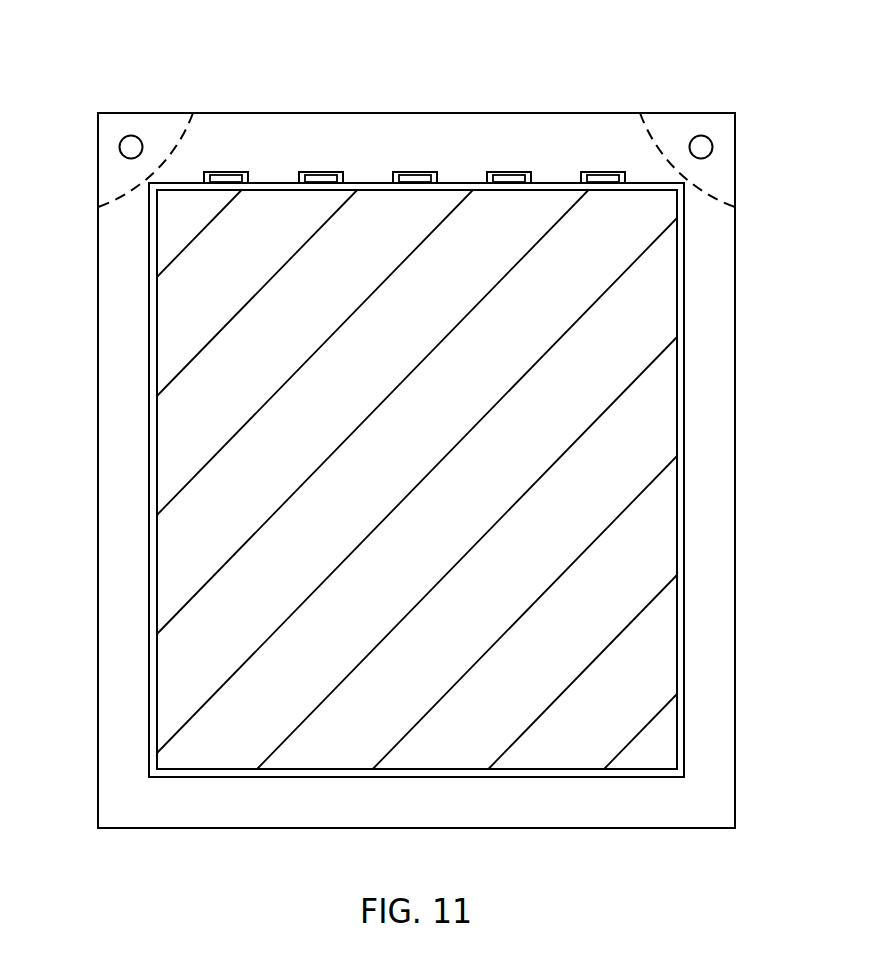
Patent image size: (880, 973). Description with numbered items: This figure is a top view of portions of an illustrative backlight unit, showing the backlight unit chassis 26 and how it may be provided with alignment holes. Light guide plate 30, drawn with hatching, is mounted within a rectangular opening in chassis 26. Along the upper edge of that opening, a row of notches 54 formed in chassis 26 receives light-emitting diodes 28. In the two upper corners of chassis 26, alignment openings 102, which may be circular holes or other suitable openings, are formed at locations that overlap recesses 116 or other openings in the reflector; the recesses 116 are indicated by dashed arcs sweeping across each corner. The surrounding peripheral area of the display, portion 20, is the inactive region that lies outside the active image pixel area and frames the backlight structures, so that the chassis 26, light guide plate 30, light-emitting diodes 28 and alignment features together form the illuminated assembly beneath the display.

The portion of display 20 is at (115, 455).
The chassis 26 is at (412, 133).
The light-emitting diodes 28 is at (215, 176).
The light guide plate 30 is at (660, 411).
The notches 54 is at (304, 172).
The alignment openings 102 is at (130, 134).
The recesses 116 is at (127, 194).